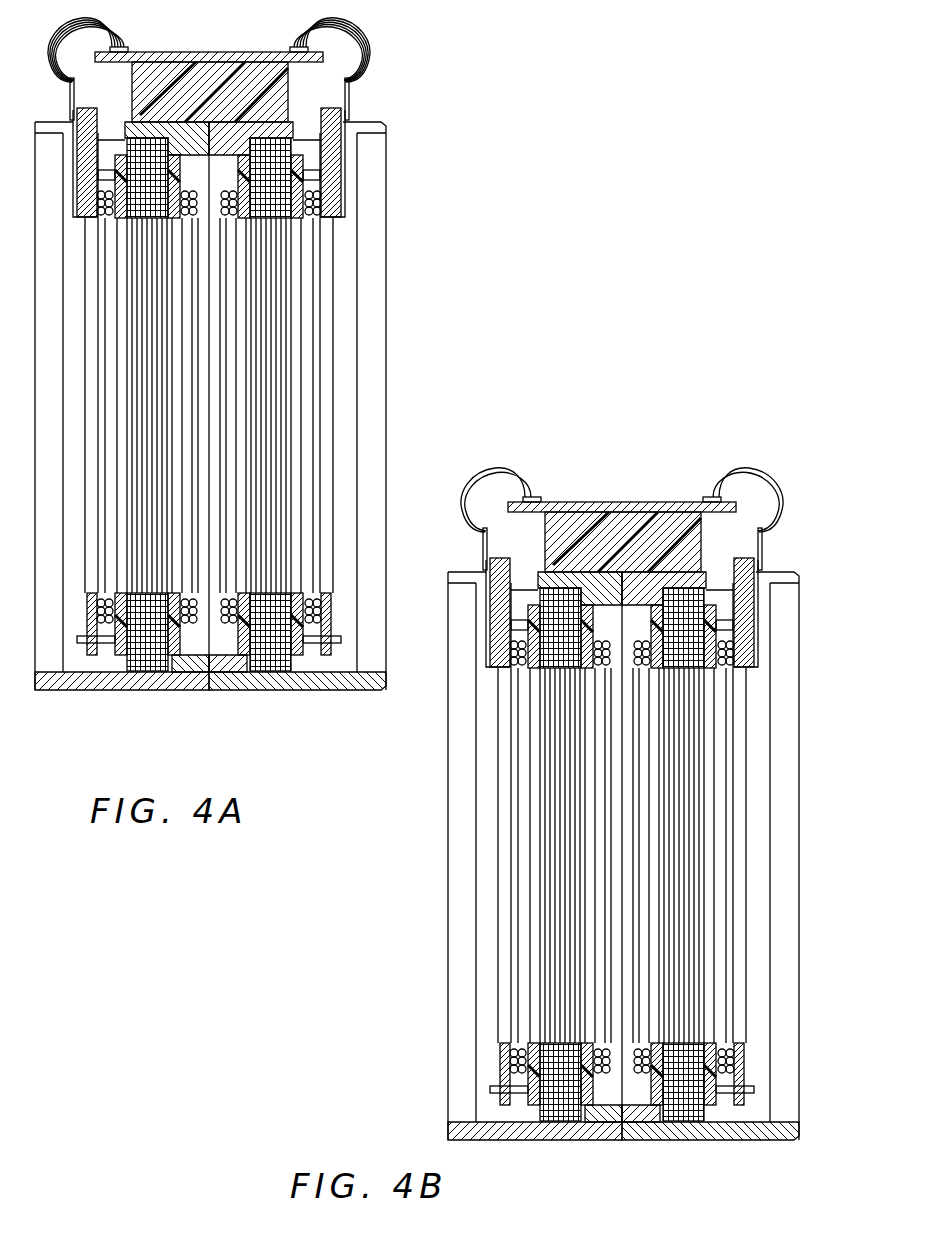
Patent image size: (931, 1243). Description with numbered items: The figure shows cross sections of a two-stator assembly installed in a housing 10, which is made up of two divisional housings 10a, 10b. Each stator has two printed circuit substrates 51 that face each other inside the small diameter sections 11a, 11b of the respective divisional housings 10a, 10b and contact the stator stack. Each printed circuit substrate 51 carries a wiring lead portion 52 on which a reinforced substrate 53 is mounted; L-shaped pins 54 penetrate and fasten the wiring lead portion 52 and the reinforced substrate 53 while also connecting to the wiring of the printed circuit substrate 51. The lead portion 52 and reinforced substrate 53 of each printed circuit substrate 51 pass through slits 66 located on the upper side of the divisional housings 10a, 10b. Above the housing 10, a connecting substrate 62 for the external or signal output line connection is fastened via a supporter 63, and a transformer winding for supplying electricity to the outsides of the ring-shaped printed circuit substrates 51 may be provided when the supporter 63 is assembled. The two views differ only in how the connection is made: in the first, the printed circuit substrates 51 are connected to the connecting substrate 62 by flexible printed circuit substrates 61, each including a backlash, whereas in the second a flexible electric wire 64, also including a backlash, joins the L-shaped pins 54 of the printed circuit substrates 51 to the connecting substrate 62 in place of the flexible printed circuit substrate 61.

In FIG. 4A, the housing 10 is at (196, 717).
In FIG. 4B, the housing 10 is at (595, 792).
In FIG. 4A, the divisional housing 10a is at (137, 686).
In FIG. 4A, the divisional housing 10b is at (262, 686).
In FIG. 4A, the small diameter section 11a is at (142, 128).
In FIG. 4A, the small diameter section 11b is at (268, 124).
In FIG. 4A, the printed circuit substrate 51 is at (335, 270).
In FIG. 4B, the printed circuit substrate 51 is at (640, 856).
In FIG. 4A, the wiring lead portion 52 is at (337, 218).
In FIG. 4B, the wiring lead portion 52 is at (783, 638).
In FIG. 4A, the reinforced substrate 53 is at (343, 175).
In FIG. 4B, the reinforced substrate 53 is at (782, 612).
In FIG. 4A, the L-shaped pin 54 is at (351, 99).
In FIG. 4A, the flexible printed circuit substrate 61 is at (364, 44).
In FIG. 4A, the connecting substrate 62 is at (228, 54).
In FIG. 4B, the connecting substrate 62 is at (622, 487).
In FIG. 4A, the supporter 63 is at (176, 68).
In FIG. 4B, the supporter 63 is at (623, 516).
In FIG. 4B, the flexible electric wire 64 is at (630, 488).
In FIG. 4A, the slit 66 is at (50, 128).
In FIG. 4B, the slit 66 is at (514, 597).